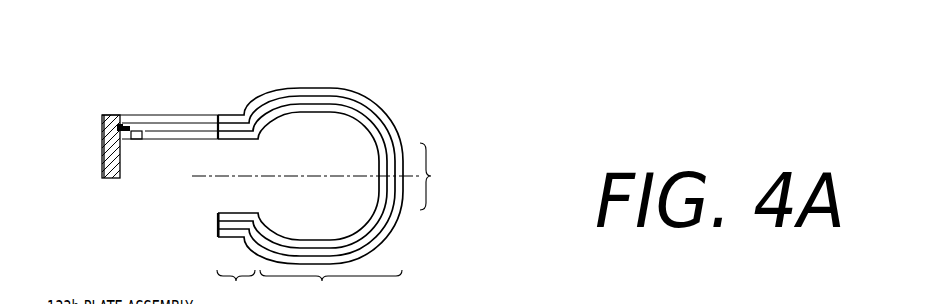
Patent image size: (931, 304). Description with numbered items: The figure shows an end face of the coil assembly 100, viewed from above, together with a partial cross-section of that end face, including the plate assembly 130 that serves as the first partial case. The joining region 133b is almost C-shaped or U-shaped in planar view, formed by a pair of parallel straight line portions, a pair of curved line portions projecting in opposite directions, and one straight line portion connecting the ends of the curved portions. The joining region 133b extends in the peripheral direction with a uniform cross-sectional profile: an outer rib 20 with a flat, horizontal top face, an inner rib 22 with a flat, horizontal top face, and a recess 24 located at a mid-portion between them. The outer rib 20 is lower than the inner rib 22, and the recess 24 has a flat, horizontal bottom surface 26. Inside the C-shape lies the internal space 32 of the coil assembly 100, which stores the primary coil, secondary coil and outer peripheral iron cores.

The outer rib 20 is at (121, 125).
The inner rib 22 is at (134, 141).
The recess 24 is at (127, 130).
The bottom surface 26 is at (118, 127).
The internal space 32 is at (273, 205).
The coil assembly 100 is at (505, 28).
The plate assembly 130 is at (428, 93).
The joining region 133b is at (96, 98).